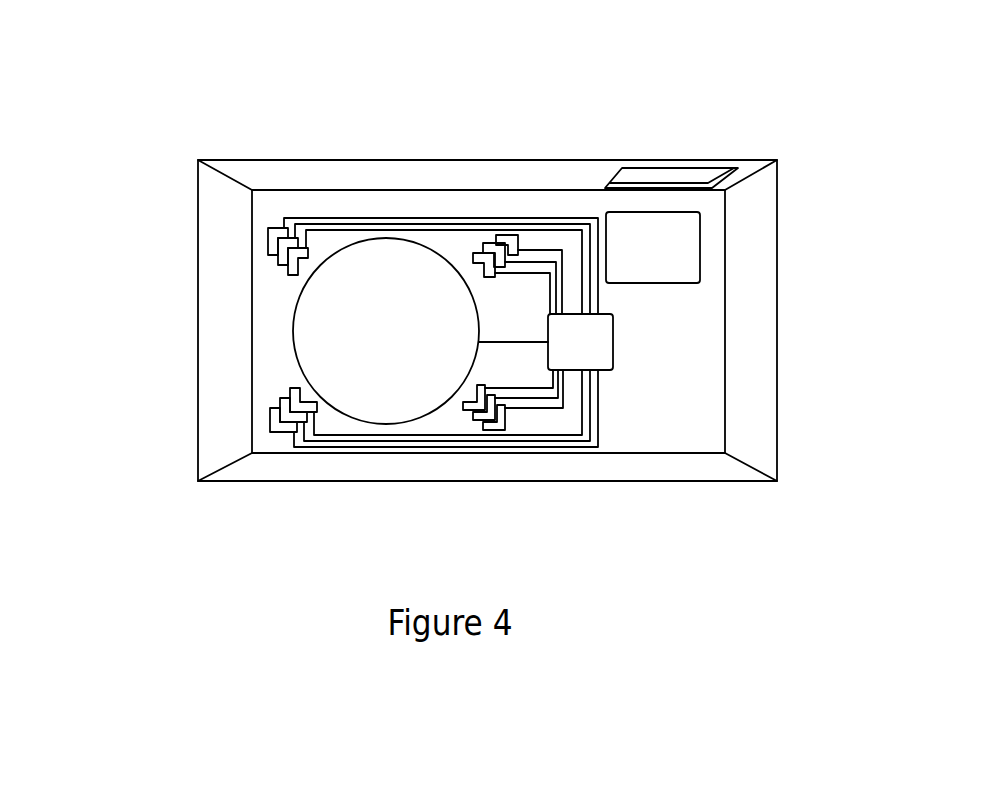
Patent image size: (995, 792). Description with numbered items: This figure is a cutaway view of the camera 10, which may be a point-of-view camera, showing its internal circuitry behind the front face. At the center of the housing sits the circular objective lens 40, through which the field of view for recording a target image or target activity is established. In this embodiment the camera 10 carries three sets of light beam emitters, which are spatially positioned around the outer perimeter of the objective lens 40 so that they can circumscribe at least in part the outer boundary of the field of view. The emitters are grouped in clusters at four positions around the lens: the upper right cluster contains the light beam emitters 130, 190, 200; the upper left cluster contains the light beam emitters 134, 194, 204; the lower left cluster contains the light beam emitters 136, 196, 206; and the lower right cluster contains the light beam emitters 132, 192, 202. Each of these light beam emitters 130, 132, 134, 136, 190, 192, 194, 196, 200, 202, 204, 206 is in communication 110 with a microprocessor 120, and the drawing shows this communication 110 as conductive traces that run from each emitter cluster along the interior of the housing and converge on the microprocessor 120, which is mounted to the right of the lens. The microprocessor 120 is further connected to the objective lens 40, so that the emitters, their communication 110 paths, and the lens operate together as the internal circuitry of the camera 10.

The camera 10 is at (603, 58).
The objective lens 40 is at (378, 240).
The communication 110 is at (417, 217).
The microprocessor 120 is at (583, 343).
The light beam emitter 130 is at (473, 258).
The light beam emitter 132 is at (463, 408).
The light beam emitter 134 is at (291, 268).
The light beam emitter 136 is at (312, 438).
The light beam emitter 190 is at (492, 240).
The light beam emitter 192 is at (473, 416).
The light beam emitter 194 is at (278, 256).
The light beam emitter 196 is at (280, 399).
The light beam emitter 200 is at (516, 236).
The light beam emitter 202 is at (485, 432).
The light beam emitter 204 is at (268, 240).
The light beam emitter 206 is at (272, 436).